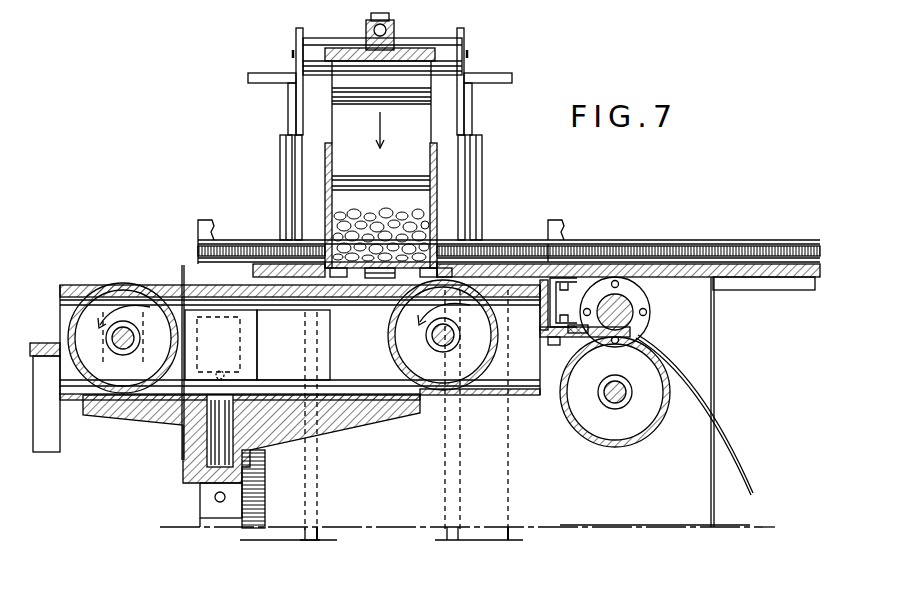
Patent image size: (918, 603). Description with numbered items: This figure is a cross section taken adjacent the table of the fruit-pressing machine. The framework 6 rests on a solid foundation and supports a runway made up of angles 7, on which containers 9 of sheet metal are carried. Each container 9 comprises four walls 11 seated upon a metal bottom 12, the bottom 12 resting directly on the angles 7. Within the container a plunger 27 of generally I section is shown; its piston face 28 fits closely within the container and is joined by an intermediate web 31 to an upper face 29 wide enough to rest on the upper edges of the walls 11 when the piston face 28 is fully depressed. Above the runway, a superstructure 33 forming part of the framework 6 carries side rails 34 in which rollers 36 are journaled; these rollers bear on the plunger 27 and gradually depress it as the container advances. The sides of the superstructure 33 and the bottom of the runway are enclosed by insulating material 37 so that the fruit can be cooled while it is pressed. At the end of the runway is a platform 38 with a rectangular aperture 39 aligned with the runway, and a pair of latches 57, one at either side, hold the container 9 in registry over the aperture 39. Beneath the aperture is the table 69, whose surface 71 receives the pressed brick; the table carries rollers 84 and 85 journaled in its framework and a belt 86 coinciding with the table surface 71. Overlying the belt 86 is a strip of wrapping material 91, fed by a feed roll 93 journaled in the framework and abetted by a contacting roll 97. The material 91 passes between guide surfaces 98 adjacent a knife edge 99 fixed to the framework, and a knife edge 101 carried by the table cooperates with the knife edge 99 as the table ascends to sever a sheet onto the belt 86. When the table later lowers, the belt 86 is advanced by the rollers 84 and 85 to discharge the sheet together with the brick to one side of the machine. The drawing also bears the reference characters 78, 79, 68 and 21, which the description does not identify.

The side rails 34 is at (296, 32).
The rollers 36 is at (314, 56).
The bearing 79 is at (374, 28).
The bearing block 78 is at (396, 22).
The superstructure 33 is at (272, 77).
The intermediate web 31 is at (345, 117).
The upper face 29 is at (350, 78).
The plunger 27 is at (446, 106).
The insulating material 37 is at (282, 160).
The walls 11 is at (325, 152).
The piston face 28 is at (356, 200).
The container 9 is at (438, 163).
The latches 57 is at (197, 232).
The table surface 71 is at (205, 277).
The wrapping material 91 is at (236, 284).
The angles 7 is at (318, 270).
The bottom 12 is at (452, 268).
The platform 38 is at (562, 263).
The bar 68 is at (676, 266).
The roller 85 is at (106, 285).
The belt 86 is at (141, 283).
The table 69 is at (232, 346).
The aperture 39 is at (322, 316).
The vibrator 21 is at (382, 272).
The knife edge 101 is at (544, 306).
The roller 84 is at (497, 345).
The knife edge 99 is at (552, 315).
The contacting roll 97 is at (632, 310).
The guide surfaces 98 is at (590, 341).
The feed roll 93 is at (670, 368).
The framework 6 is at (290, 535).